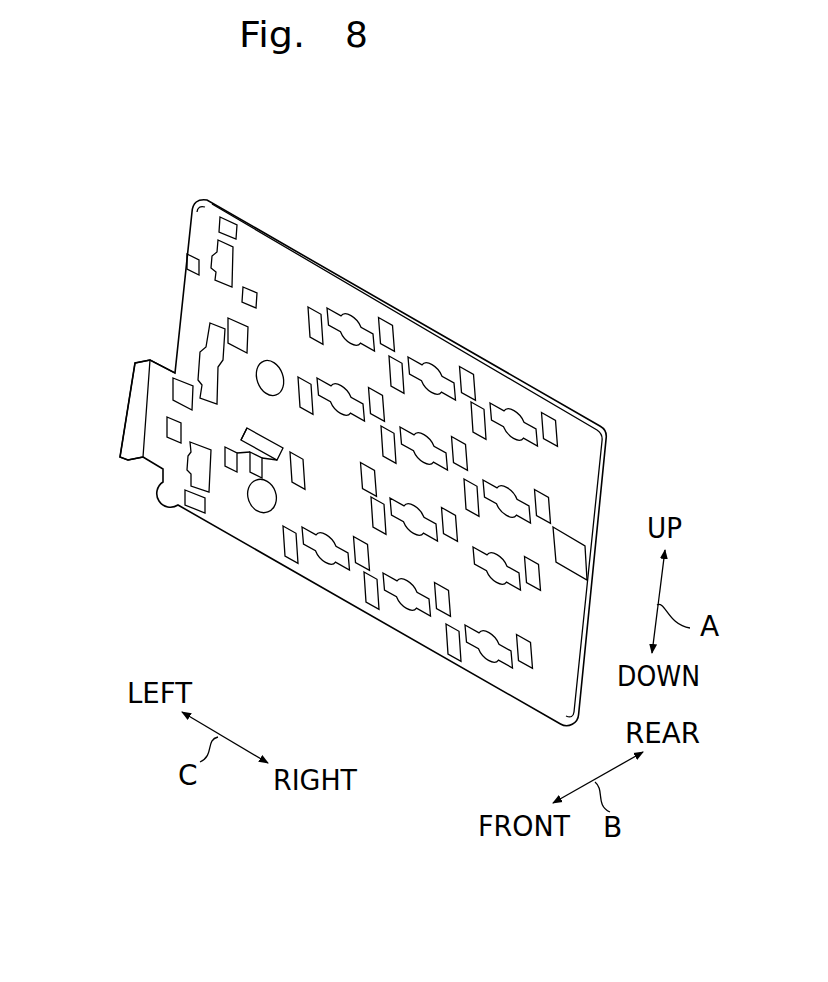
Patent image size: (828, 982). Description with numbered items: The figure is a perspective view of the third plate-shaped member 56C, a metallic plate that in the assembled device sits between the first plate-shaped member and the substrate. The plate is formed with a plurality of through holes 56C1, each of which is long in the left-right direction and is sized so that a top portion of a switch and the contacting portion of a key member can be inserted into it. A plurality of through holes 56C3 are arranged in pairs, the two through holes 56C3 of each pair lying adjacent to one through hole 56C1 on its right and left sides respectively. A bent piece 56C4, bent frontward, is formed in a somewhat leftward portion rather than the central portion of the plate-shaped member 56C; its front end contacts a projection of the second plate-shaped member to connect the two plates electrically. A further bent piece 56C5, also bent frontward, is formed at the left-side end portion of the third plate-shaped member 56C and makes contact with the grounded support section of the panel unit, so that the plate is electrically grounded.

The third plate-shaped member 56C is at (317, 461).
The through hole 56C1 is at (318, 552).
The through hole 56C3 is at (549, 441).
The bent piece 56C4 is at (252, 475).
The bent piece 56C5 is at (128, 409).